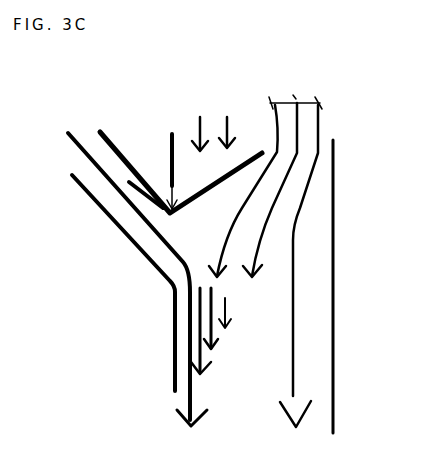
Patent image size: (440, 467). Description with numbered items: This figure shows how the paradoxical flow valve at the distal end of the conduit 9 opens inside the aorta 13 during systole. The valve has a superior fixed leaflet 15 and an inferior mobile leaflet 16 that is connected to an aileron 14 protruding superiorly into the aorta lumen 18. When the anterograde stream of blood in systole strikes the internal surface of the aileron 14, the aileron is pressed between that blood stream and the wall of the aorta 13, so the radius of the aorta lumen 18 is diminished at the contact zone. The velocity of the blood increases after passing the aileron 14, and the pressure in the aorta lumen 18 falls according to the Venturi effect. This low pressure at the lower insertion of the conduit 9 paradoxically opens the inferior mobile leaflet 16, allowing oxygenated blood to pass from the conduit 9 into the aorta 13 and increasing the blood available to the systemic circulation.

The conduit 9 is at (102, 203).
The aorta 13 is at (334, 368).
The aileron 14 is at (262, 154).
The superior fixed leaflet 15 is at (172, 198).
The inferior mobile leaflet 16 is at (145, 203).
The aorta lumen 18 is at (330, 107).